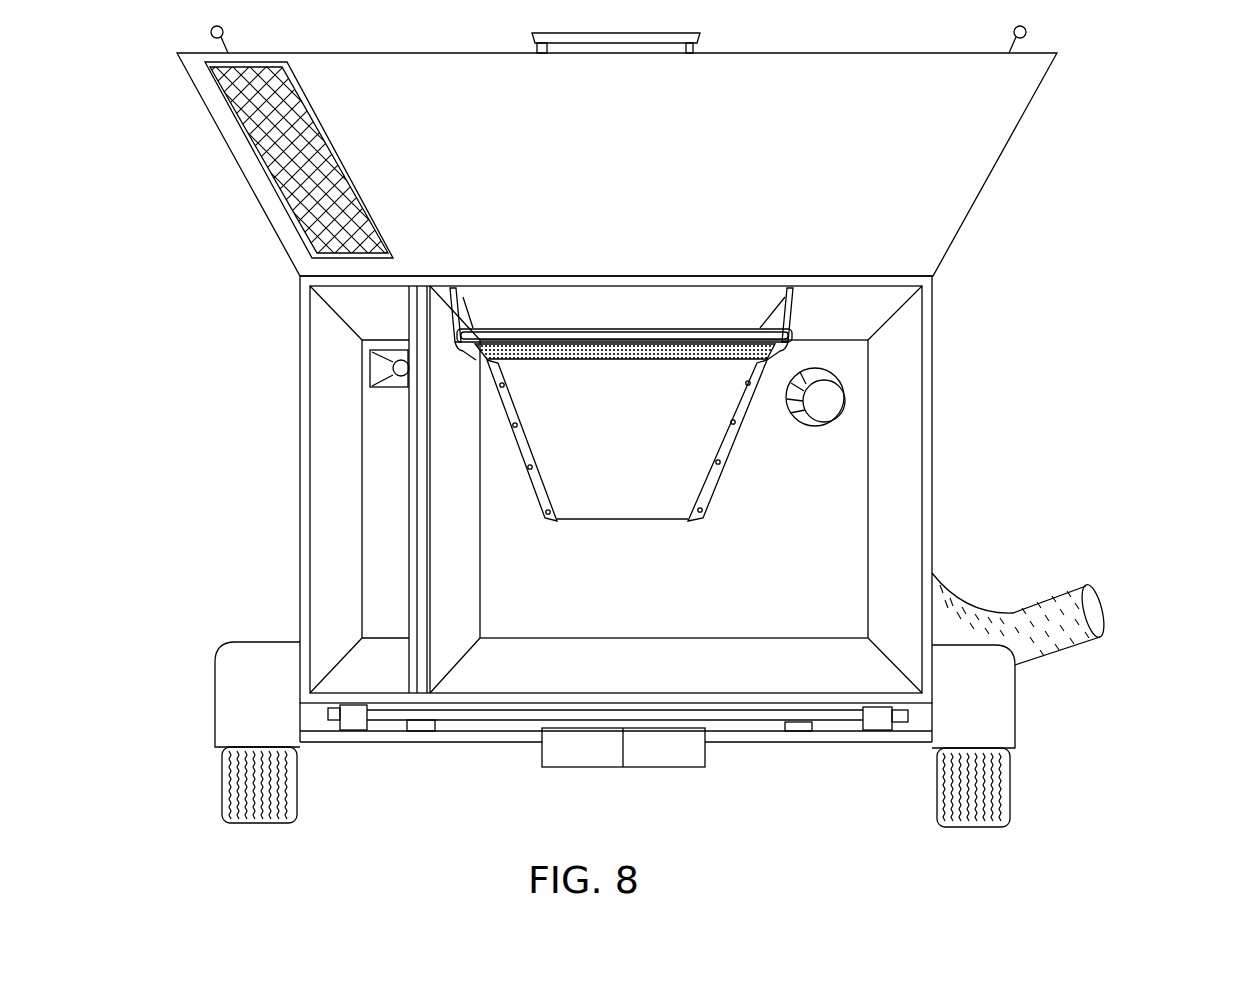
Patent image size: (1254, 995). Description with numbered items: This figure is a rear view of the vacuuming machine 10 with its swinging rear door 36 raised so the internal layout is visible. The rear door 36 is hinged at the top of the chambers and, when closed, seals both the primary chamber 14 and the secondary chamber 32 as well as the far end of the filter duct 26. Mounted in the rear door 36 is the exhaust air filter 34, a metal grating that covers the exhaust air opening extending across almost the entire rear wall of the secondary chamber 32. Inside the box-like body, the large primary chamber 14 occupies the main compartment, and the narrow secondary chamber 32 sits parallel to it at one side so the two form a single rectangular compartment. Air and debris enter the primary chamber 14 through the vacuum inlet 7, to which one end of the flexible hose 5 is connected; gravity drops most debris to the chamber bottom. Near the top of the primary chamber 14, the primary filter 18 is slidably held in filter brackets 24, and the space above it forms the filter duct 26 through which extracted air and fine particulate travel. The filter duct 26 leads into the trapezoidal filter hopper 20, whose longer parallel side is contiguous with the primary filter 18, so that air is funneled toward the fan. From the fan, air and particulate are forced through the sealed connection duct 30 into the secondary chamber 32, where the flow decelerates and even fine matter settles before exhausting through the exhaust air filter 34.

The hose 5 is at (1020, 590).
The vacuum inlet 7 is at (907, 360).
The vacuuming machine 10 is at (1237, 295).
The primary chamber 14 is at (679, 489).
The primary filter 18 is at (647, 420).
The filter hopper 20 is at (627, 475).
The filter brackets 24 is at (586, 280).
The filter duct 26 is at (624, 276).
The connection duct 30 is at (301, 351).
The secondary chamber 32 is at (303, 489).
The exhaust air filter 34 is at (326, 160).
The rear door 36 is at (657, 164).